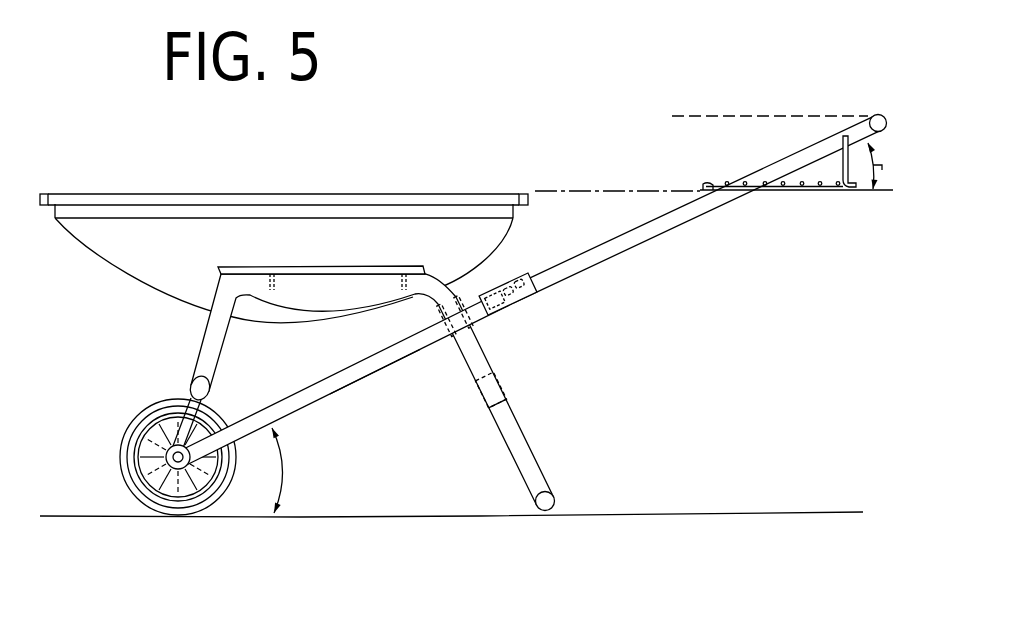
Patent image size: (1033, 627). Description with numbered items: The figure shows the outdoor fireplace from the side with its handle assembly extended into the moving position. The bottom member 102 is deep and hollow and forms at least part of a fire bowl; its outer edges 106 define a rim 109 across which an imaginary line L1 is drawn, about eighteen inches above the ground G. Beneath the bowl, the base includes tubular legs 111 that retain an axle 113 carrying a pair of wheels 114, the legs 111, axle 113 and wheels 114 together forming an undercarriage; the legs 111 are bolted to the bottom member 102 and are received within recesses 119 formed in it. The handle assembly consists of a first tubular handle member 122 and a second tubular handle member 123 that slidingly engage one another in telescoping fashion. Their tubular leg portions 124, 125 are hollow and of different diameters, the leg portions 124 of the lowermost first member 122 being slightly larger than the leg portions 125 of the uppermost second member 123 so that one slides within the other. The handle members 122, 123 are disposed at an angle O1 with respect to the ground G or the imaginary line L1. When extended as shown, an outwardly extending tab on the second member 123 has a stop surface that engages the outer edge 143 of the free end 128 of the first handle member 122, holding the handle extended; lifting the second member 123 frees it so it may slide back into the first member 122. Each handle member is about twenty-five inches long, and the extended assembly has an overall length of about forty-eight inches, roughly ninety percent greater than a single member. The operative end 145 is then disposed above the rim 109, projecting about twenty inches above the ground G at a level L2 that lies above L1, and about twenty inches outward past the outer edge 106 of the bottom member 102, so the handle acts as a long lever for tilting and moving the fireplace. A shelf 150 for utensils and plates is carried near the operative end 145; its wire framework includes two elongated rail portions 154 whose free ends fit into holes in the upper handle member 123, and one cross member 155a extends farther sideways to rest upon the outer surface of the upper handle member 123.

The bottom member 102 is at (180, 256).
The outer edges 106 is at (45, 194).
The rim 109 is at (525, 192).
The legs 111 is at (203, 353).
The axle 113 is at (166, 452).
The wheels 114 is at (127, 425).
The recesses 119 is at (224, 274).
The first tubular handle member 122 is at (316, 404).
The second tubular handle member 123 is at (653, 240).
The leg portions 124 is at (372, 372).
The leg portions 125 is at (790, 156).
The free end 128 is at (518, 308).
The outer edge 143 is at (528, 268).
The operative end 145 is at (885, 117).
The shelf 150 is at (857, 122).
The rail portions 154 is at (768, 194).
The cross member 155a is at (711, 185).
The imaginary line L1 is at (850, 191).
The level L2 is at (703, 116).
The angle O1 is at (872, 192).
The ground G is at (487, 517).